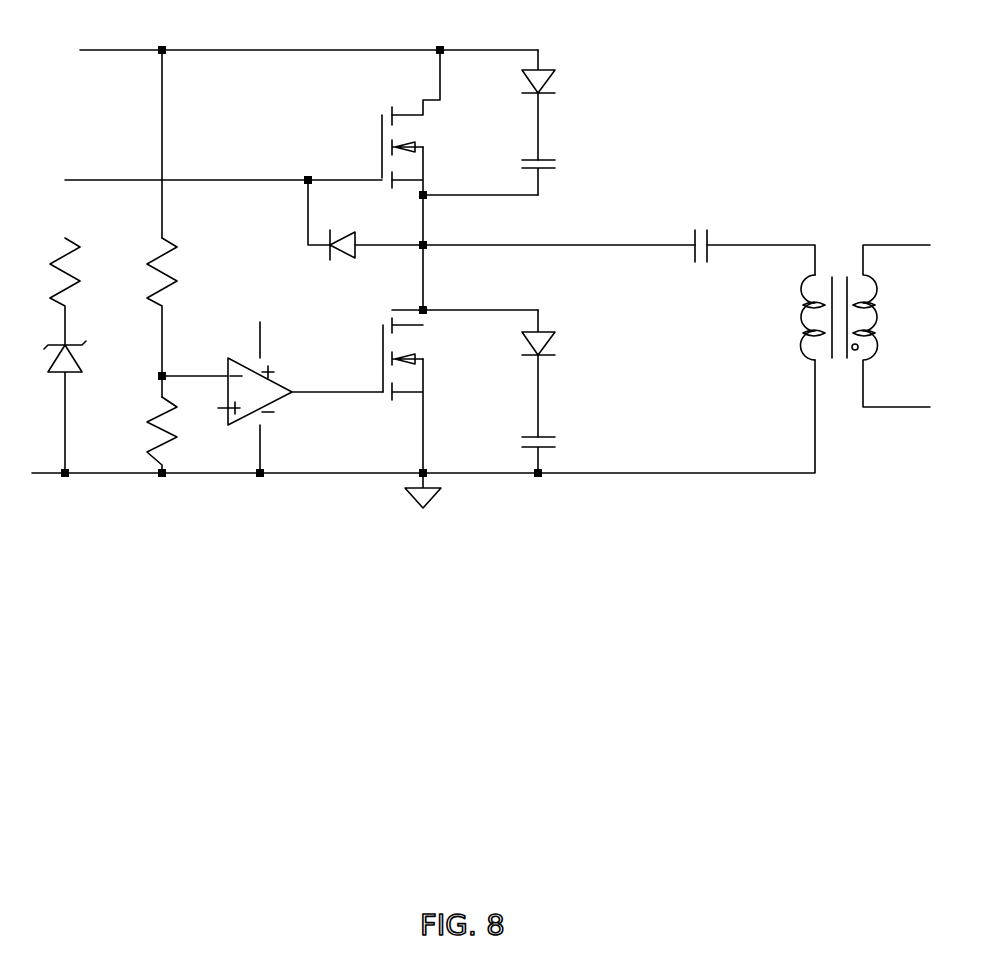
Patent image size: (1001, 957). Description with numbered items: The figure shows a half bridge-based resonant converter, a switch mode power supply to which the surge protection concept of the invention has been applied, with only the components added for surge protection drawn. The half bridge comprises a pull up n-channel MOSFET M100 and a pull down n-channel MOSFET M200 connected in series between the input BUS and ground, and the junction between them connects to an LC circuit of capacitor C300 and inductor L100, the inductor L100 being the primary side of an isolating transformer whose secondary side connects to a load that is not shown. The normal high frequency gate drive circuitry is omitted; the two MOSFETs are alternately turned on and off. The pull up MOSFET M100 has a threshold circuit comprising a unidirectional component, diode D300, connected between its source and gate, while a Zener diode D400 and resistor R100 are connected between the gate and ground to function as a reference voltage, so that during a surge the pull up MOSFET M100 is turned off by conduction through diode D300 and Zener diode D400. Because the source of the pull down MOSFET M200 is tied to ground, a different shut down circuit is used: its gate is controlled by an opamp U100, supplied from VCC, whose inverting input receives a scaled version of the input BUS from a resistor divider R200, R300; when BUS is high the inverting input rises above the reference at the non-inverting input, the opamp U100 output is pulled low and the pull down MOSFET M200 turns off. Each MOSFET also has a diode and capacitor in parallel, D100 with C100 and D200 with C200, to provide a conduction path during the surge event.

The input BUS is at (201, 33).
The resistor R100 is at (95, 291).
The resistor R200 is at (192, 317).
The resistor R300 is at (134, 435).
The Zener diode D400 is at (48, 394).
The opamp U100 is at (272, 397).
The supply voltage VCC is at (283, 326).
The pull up n-channel MOSFET M100 is at (435, 147).
The pull down n-channel MOSFET M200 is at (435, 359).
The diode D100 is at (563, 99).
The diode D200 is at (561, 367).
The diode D300 is at (350, 230).
The capacitor C100 is at (562, 162).
The capacitor C200 is at (561, 438).
The capacitor C300 is at (707, 232).
The inductor L100 is at (836, 326).